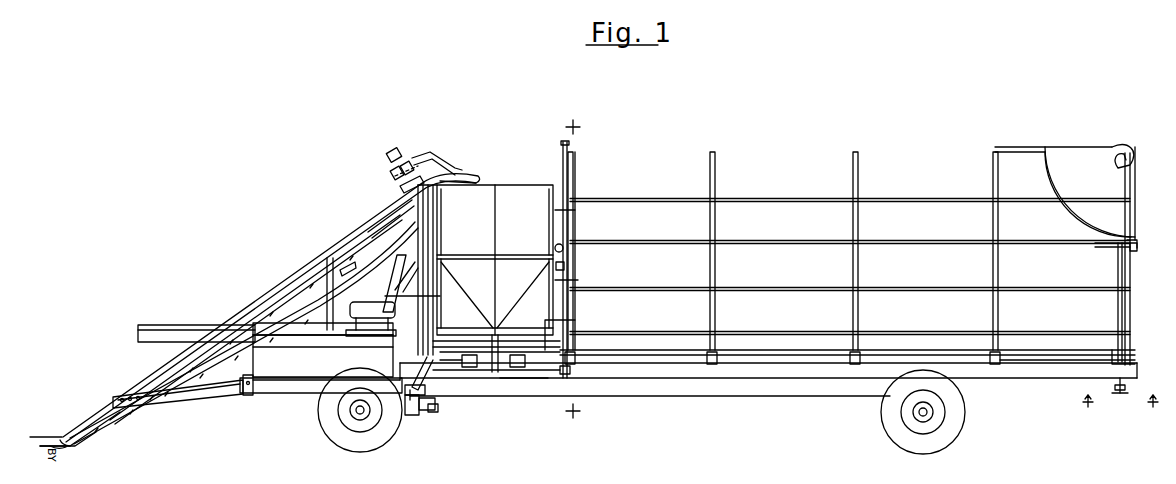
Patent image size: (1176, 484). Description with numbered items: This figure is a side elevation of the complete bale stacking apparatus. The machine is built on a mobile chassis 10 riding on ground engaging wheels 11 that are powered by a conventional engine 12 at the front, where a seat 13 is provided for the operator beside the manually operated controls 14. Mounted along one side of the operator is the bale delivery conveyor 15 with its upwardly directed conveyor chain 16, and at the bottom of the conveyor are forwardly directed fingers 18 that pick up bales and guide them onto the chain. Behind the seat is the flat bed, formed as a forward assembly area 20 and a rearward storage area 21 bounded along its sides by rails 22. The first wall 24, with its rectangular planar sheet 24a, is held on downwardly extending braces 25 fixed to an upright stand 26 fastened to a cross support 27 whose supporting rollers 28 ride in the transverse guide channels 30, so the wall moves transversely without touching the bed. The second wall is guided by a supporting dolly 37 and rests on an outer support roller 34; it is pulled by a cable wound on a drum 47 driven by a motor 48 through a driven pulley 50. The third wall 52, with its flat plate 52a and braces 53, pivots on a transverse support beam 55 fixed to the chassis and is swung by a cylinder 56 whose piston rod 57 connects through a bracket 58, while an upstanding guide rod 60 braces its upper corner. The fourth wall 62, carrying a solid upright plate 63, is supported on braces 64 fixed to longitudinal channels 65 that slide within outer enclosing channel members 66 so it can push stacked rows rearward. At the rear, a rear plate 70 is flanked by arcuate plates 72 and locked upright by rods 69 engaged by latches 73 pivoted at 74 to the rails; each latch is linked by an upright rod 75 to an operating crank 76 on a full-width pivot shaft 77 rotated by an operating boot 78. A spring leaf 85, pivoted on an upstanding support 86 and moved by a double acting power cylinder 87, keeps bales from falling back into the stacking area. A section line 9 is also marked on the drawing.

The section line 9- 9 is at (563, 130).
The mobile chassis 10 is at (644, 392).
The ground engaging wheels 11 is at (325, 410).
The engine 12 is at (322, 364).
The seat 13 is at (370, 302).
The manually operated controls 14 is at (340, 260).
The bale delivery conveyor 15 is at (250, 300).
The conveyor chain 16 is at (322, 303).
The fingers 18 is at (44, 436).
The assembly area 20 is at (458, 372).
The storage area 21 is at (669, 349).
The rails 22 is at (580, 196).
The first wall 24 is at (512, 180).
The rectangular planar sheet 24a is at (508, 223).
The braces 25 is at (486, 297).
The upright stand 26 is at (497, 375).
The cross support 27 is at (533, 380).
The supporting rollers 28 is at (472, 372).
The transverse guide channels 30 is at (470, 352).
The outer support roller 34 is at (565, 322).
The supporting dolly 37 is at (420, 352).
The winch or drum 47 is at (426, 412).
The motor 48 is at (436, 410).
The driven pulley 50 is at (410, 415).
The third wall 52 is at (560, 180).
The flat plate 52a is at (578, 232).
The braces 53 is at (566, 213).
The transverse support beam 55 is at (569, 370).
The cylinder 56 is at (578, 288).
The piston rod 57 is at (568, 268).
The bracket 58 is at (554, 247).
The guide rod 60 is at (569, 142).
The fourth wall 62 is at (432, 233).
The upright plate 63 is at (432, 245).
The braces 64 is at (423, 296).
The longitudinal channels 65 is at (195, 326).
The outer enclosing channel members 66 is at (290, 330).
The rods 69 is at (1136, 244).
The rear plate 70 is at (1137, 247).
The arcuate plates 72 is at (1082, 187).
The latches 73 is at (1132, 240).
The pivot 74 is at (1105, 243).
The upright rod 75 is at (1120, 310).
The operating crank 76 is at (1110, 360).
The pivot shaft 77 is at (1112, 366).
The operating boot 78 is at (1116, 396).
The spring leaf 85 is at (455, 150).
The upstanding support 86 is at (440, 160).
The double acting power cylinder 87 is at (400, 190).